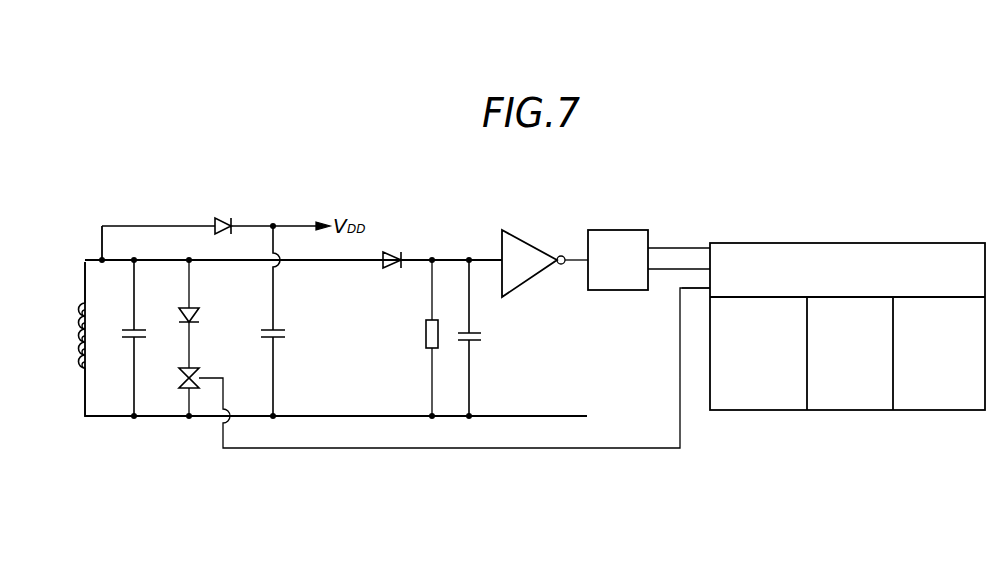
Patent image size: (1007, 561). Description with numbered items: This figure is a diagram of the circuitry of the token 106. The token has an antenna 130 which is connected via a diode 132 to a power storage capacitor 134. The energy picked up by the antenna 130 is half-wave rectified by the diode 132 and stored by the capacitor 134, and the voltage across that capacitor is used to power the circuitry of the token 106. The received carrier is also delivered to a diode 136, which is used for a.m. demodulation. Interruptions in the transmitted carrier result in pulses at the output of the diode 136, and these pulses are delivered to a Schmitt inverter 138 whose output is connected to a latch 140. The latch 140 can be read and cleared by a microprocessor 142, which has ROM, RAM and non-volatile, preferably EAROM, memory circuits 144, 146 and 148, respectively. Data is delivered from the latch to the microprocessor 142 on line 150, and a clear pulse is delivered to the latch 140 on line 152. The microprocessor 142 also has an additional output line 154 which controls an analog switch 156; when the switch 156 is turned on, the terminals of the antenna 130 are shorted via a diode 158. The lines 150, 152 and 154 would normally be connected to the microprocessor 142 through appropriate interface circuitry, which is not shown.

The token 106 is at (565, 211).
The antenna 130 is at (90, 318).
The diode 132 is at (216, 217).
The power storage capacitor 134 is at (284, 338).
The diode 136 is at (389, 252).
The Schmitt inverter 138 is at (521, 284).
The latch 140 is at (620, 230).
The microprocessor 142 is at (859, 283).
The ROM memory circuit 144 is at (774, 373).
The RAM memory circuit 146 is at (870, 373).
The non-volatile memory circuit 148 is at (957, 373).
The line 150 is at (677, 248).
The line 152 is at (670, 271).
The output line 154 is at (586, 450).
The analog switch 156 is at (182, 378).
The diode 158 is at (199, 316).